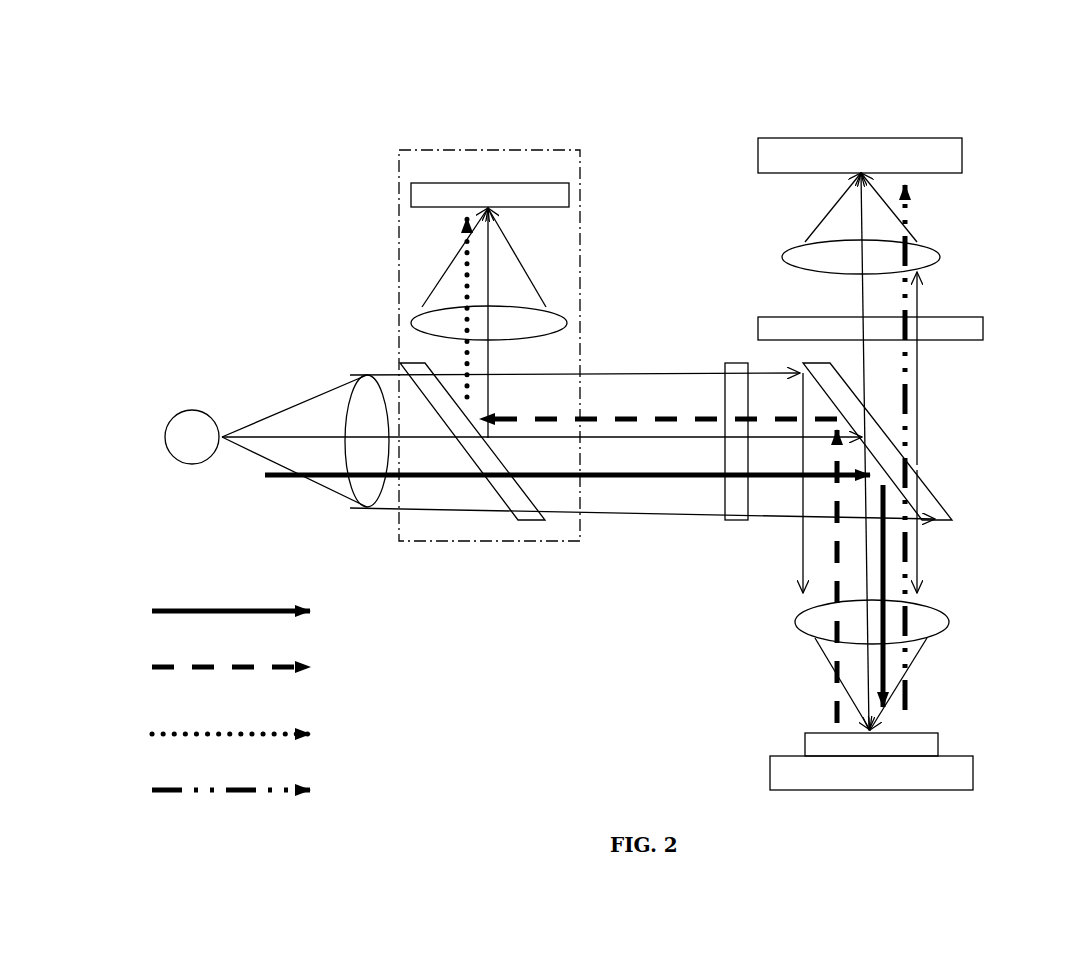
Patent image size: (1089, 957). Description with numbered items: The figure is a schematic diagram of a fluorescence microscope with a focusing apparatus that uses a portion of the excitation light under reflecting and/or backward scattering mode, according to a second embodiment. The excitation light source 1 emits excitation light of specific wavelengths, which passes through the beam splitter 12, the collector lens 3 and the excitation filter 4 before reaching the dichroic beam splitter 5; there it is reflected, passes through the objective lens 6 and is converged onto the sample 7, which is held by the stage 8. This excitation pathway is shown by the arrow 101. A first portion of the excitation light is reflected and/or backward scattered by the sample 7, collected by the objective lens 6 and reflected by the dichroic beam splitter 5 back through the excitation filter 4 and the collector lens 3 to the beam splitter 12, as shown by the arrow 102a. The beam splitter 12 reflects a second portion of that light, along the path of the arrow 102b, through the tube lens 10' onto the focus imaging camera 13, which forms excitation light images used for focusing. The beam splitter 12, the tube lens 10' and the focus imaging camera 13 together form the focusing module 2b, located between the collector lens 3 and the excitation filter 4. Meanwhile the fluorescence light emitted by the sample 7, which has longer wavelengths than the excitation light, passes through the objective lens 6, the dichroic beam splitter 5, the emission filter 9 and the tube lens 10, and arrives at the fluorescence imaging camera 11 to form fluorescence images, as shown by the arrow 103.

The excitation light source 1 is at (192, 442).
The focusing module 2b is at (400, 228).
The collector lens 3 is at (375, 375).
The excitation filter 4 is at (728, 497).
The dichroic beam splitter 5 is at (925, 507).
The objective lens 6 is at (925, 616).
The sample 7 is at (930, 740).
The stage 8 is at (975, 778).
The emission filter 9 is at (960, 325).
The tube lens 10 is at (915, 250).
The tube lens 10' is at (535, 326).
The fluorescence imaging camera 11 is at (885, 138).
The beam splitter 12 is at (528, 510).
The focus imaging camera 13 is at (480, 183).
The arrow 101 is at (630, 475).
The arrow 102a is at (693, 418).
The arrow 102b is at (467, 283).
The arrow 103 is at (915, 398).